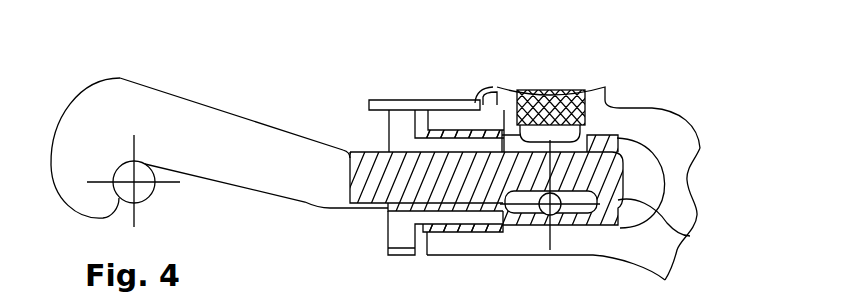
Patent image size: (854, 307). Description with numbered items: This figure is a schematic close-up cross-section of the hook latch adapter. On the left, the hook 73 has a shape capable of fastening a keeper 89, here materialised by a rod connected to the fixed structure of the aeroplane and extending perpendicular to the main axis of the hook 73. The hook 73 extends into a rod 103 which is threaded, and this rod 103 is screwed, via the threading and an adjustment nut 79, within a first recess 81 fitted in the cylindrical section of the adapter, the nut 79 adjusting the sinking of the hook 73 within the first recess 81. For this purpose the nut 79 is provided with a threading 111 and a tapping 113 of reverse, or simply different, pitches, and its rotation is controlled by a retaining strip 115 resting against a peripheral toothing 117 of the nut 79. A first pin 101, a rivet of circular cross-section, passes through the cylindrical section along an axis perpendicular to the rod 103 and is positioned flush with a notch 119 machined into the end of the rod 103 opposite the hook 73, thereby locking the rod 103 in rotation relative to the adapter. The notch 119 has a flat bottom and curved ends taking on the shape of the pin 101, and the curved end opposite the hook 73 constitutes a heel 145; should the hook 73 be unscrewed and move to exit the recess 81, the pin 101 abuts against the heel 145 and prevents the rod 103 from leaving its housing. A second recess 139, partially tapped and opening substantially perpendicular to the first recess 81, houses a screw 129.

The hook 73 is at (78, 67).
The keeper 89 is at (158, 198).
The retaining strip 115 is at (380, 102).
The rod 103 is at (522, 148).
The second recess 139 is at (552, 138).
The screw 129 is at (567, 95).
The first recess 81 is at (643, 162).
The heel 145 is at (697, 219).
The tapping 113 is at (412, 187).
The nut 79 is at (390, 232).
The peripheral toothing 117 is at (400, 256).
The threading 111 is at (450, 233).
The notch 119 is at (520, 200).
The first pin 101 is at (545, 208).